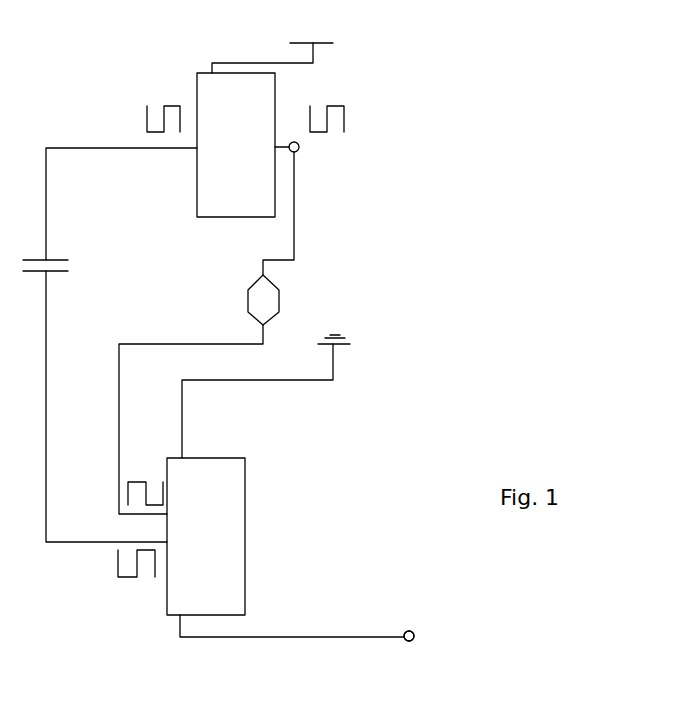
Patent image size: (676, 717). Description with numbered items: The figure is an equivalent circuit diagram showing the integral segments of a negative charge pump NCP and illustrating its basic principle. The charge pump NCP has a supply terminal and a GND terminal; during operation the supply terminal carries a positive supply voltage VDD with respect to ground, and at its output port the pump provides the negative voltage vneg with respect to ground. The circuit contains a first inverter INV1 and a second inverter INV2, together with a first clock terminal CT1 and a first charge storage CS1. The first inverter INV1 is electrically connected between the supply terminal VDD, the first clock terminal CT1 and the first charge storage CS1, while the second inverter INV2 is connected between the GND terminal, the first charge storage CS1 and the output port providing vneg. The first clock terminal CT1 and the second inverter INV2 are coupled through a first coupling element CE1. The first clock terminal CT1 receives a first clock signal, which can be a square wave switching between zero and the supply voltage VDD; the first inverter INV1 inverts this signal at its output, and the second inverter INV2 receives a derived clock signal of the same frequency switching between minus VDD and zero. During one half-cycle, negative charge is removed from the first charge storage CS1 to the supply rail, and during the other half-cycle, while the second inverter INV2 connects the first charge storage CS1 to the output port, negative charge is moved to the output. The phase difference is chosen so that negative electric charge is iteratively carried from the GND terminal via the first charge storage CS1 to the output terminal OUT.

The negative charge pump NCP is at (540, 163).
The first inverter INV1 is at (197, 212).
The second inverter INV2 is at (245, 528).
The supply voltage VDD is at (274, 43).
The first clock terminal CT1 is at (300, 150).
The first charge storage CS1 is at (53, 272).
The first coupling element CE1 is at (281, 295).
The GND terminal GND is at (301, 393).
The negative voltage vneg is at (400, 618).
The output terminal OUT is at (414, 640).